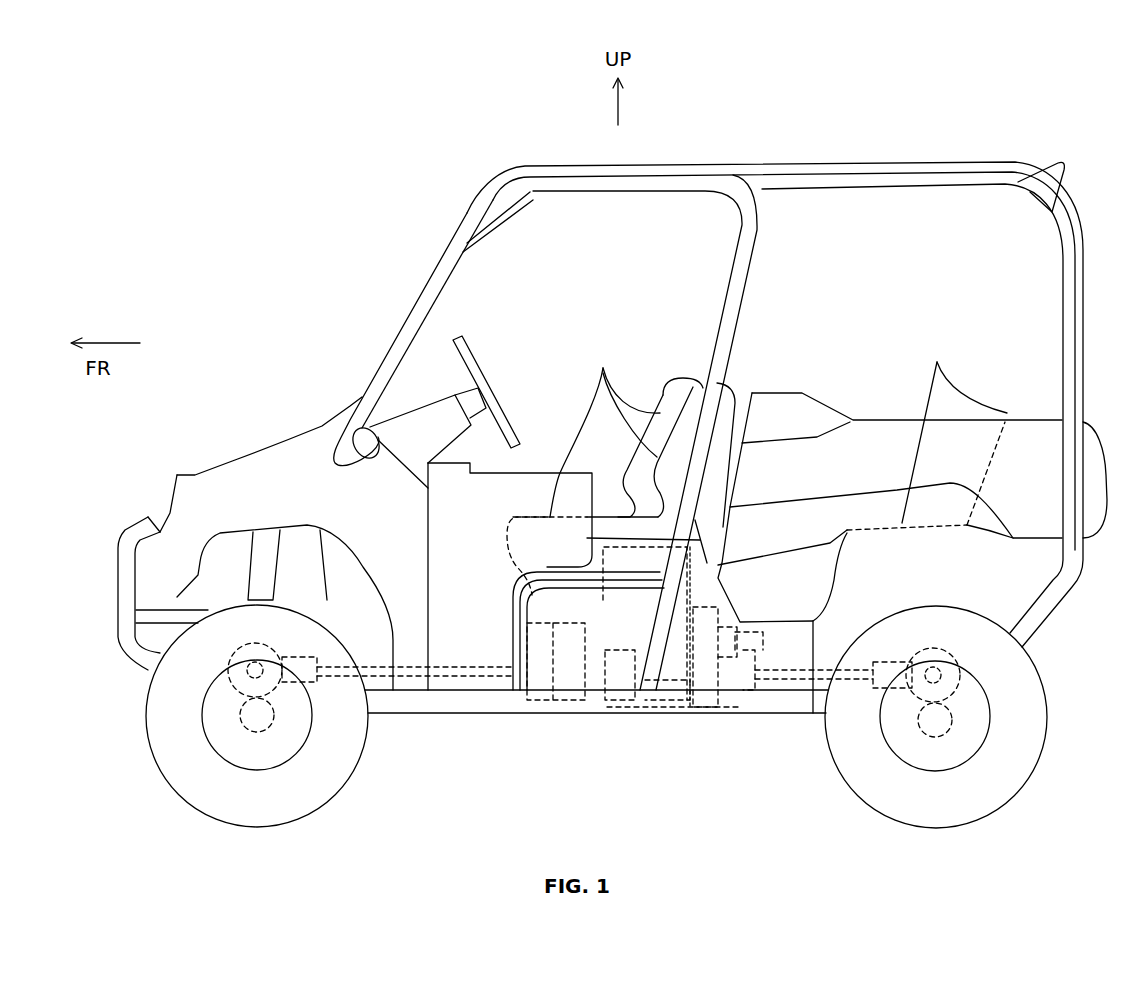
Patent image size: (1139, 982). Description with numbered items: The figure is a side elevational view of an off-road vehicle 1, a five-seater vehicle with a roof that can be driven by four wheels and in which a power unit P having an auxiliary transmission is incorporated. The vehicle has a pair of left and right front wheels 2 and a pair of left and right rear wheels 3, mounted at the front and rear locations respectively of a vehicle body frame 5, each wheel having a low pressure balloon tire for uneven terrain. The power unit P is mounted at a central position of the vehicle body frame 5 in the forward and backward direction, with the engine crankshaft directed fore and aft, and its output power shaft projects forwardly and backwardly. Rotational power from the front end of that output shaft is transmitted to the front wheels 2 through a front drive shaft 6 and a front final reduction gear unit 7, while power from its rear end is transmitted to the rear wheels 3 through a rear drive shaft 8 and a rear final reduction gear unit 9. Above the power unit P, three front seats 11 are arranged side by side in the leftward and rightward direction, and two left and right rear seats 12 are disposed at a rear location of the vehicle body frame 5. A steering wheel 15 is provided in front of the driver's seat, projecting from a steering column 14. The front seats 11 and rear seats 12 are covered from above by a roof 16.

The off-road vehicle 1 is at (411, 257).
The front wheels 2 is at (145, 705).
The rear wheels 3 is at (1047, 722).
The vehicle body frame 5 is at (568, 714).
The front drive shaft 6 is at (425, 690).
The front final reduction gear unit 7 is at (280, 683).
The rear drive shaft 8 is at (778, 682).
The rear final reduction gear unit 9 is at (912, 690).
The front seats 11 is at (603, 368).
The rear seats 12 is at (937, 362).
The steering column 14 is at (425, 405).
The steering wheel 15 is at (480, 367).
The roof 16 is at (716, 162).
The power unit P is at (628, 710).